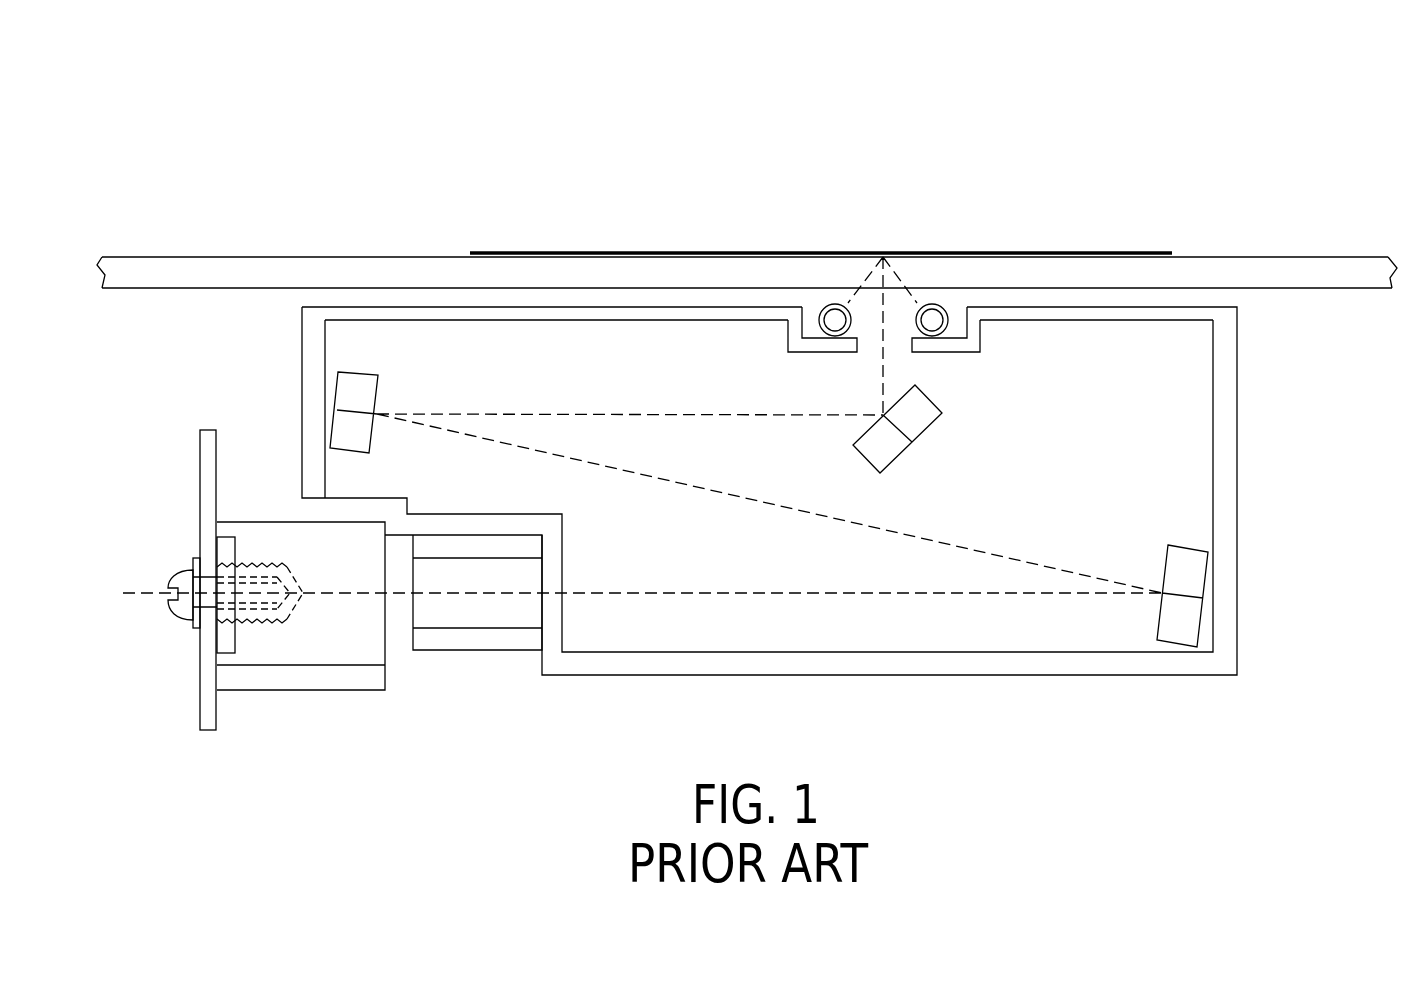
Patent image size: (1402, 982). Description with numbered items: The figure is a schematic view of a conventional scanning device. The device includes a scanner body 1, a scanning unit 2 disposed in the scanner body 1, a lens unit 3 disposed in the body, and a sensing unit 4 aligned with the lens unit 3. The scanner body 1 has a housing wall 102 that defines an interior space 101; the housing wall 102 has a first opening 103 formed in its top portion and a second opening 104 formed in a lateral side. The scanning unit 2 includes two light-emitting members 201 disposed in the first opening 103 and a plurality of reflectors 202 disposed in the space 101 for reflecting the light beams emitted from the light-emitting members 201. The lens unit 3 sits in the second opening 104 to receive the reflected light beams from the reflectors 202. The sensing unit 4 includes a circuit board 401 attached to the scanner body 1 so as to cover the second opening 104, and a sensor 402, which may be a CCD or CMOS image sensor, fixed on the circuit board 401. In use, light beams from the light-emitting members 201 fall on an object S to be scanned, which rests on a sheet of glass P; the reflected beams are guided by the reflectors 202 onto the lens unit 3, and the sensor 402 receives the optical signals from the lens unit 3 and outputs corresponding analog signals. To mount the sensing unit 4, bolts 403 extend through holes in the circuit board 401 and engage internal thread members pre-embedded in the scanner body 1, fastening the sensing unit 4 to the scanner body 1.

The scanner body 1 is at (826, 491).
The space 101 is at (1175, 434).
The housing wall 102 is at (1225, 515).
The first opening 103 is at (893, 335).
The second opening 104 is at (238, 658).
The scanning unit 2 is at (977, 378).
The light-emitting members 201 is at (838, 316).
The reflectors 202 is at (925, 417).
The lens unit 3 is at (486, 600).
The sensing unit 4 is at (204, 629).
The circuit board 401 is at (205, 667).
The sensor 402 is at (223, 543).
The bolts 403 is at (182, 572).
The sheet of glass P is at (167, 254).
The object S is at (679, 250).